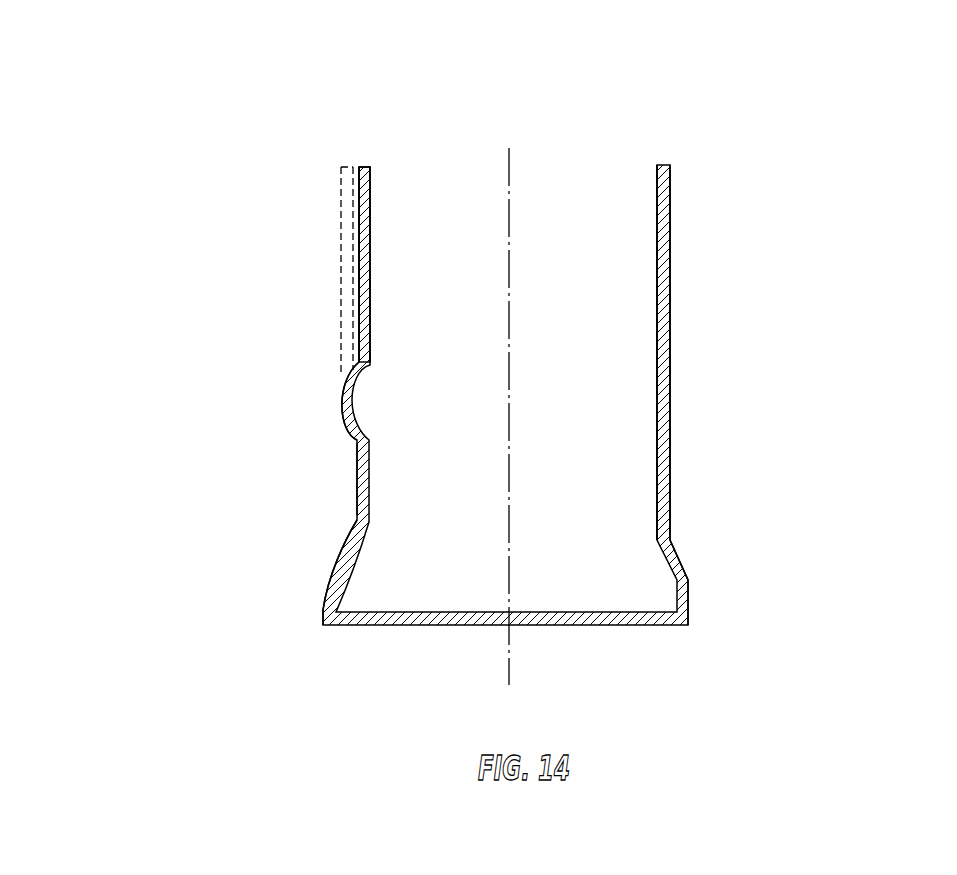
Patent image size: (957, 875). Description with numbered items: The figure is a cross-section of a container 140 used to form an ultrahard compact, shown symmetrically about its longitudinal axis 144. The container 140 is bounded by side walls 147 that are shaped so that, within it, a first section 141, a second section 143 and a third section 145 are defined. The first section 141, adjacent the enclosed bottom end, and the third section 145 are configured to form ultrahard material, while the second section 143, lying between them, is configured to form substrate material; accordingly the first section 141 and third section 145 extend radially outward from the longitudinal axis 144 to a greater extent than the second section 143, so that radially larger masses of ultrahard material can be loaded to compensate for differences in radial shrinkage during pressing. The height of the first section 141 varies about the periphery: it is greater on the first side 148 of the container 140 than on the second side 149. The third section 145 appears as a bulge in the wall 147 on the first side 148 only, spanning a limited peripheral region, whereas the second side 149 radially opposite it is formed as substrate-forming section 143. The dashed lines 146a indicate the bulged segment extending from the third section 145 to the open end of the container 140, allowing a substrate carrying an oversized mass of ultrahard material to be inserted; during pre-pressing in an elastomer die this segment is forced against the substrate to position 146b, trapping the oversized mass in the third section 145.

The container 140 is at (674, 78).
The first section 141 is at (193, 633).
The second section 143 is at (193, 515).
The longitudinal axis 144 is at (510, 168).
The third section 145 is at (193, 440).
The bulged segment 146a is at (340, 188).
The position of bulged segment after pre-pressing 146b is at (372, 187).
The side wall 147 is at (360, 261).
The first side 148 is at (326, 288).
The second side 149 is at (683, 420).